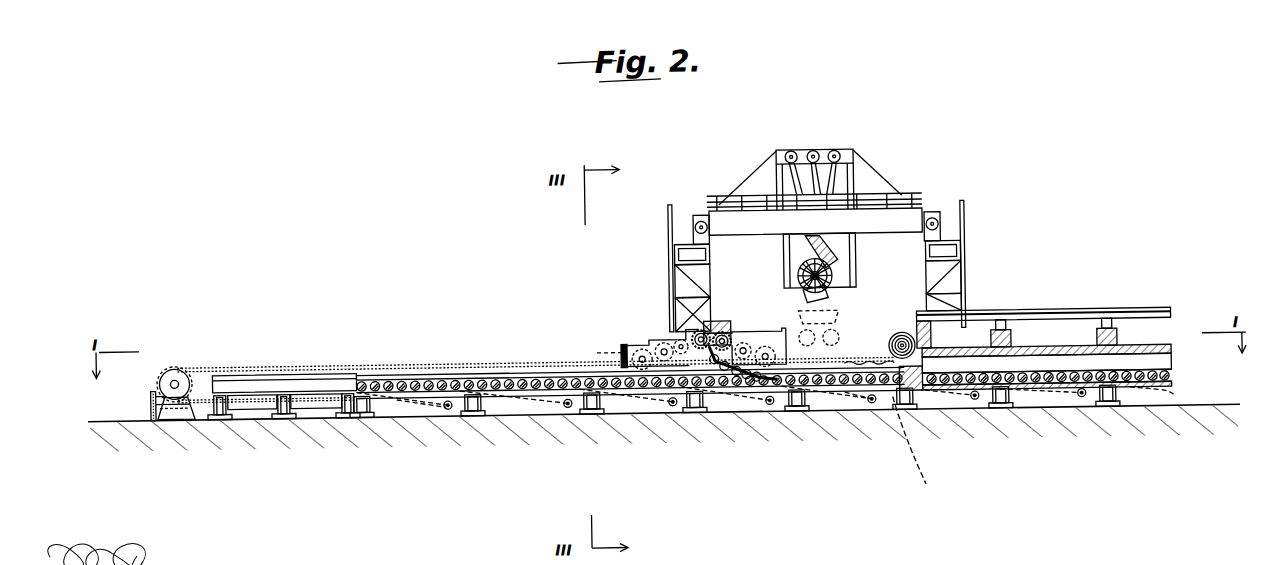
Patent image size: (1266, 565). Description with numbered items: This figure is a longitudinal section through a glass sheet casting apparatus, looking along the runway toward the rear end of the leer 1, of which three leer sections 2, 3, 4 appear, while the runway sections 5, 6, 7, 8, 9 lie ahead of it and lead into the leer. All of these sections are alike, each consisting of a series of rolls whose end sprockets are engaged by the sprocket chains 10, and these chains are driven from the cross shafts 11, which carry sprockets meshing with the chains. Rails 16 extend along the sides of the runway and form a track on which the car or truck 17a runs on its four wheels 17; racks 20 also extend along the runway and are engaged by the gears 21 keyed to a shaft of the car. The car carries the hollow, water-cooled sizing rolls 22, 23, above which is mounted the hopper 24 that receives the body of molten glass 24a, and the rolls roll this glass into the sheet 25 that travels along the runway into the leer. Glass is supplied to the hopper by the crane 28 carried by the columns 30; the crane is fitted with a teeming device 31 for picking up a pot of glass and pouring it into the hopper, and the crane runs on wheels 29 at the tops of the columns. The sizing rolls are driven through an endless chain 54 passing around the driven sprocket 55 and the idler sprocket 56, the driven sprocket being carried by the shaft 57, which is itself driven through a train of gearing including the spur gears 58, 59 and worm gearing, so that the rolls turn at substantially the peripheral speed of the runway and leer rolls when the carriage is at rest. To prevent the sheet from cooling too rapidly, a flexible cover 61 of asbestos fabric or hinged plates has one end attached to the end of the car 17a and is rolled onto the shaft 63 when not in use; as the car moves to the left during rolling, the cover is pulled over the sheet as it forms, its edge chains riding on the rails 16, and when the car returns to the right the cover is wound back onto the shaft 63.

The rear end of the leer 1 is at (1128, 352).
The leer section 2 is at (1148, 392).
The leer section 3 is at (1050, 390).
The leer section 4 is at (949, 393).
The runway section 5 is at (843, 396).
The runway section 6 is at (745, 398).
The runway section 7 is at (647, 400).
The runway section 8 is at (538, 402).
The runway section 9 is at (410, 398).
The sprocket chain 10 is at (428, 408).
The cross shaft 11 is at (448, 408).
The rail 16 is at (474, 370).
The wheel 17 is at (638, 346).
The car or truck 17a is at (620, 344).
The rack 20 is at (525, 375).
The gear 21 is at (601, 356).
The sizing roll 22 is at (682, 330).
The sizing roll 23 is at (738, 333).
The hopper 24 is at (720, 330).
The body of molten glass 24a is at (713, 325).
The sheet 25 is at (845, 320).
The crane 28 is at (740, 222).
The running wheel 29 is at (702, 218).
The column 30 is at (676, 258).
The teeming device 31 is at (806, 260).
The endless chain 54 is at (305, 368).
The driven sprocket 55 is at (191, 374).
The idler sprocket 56 is at (918, 447).
The shaft 57 is at (175, 370).
The spur gear 58 is at (152, 392).
The spur gear 59 is at (152, 400).
The cover 61 is at (862, 363).
The shaft 63 is at (903, 336).